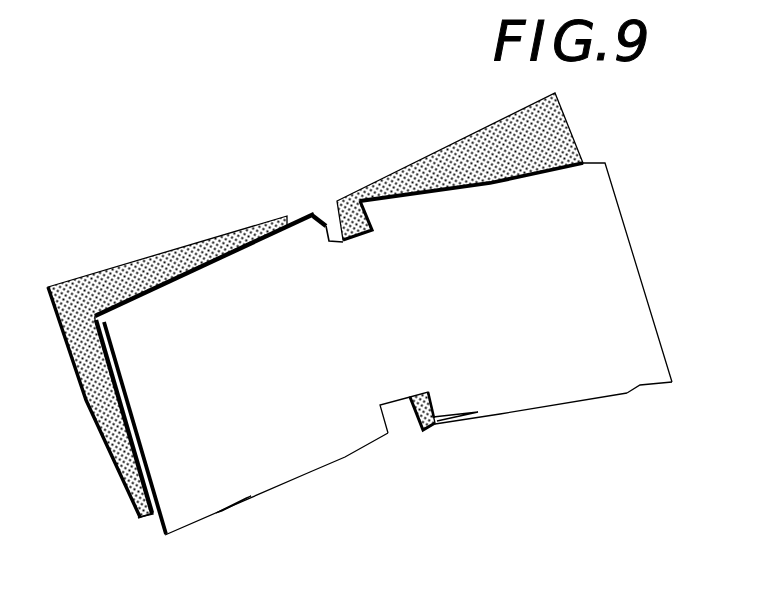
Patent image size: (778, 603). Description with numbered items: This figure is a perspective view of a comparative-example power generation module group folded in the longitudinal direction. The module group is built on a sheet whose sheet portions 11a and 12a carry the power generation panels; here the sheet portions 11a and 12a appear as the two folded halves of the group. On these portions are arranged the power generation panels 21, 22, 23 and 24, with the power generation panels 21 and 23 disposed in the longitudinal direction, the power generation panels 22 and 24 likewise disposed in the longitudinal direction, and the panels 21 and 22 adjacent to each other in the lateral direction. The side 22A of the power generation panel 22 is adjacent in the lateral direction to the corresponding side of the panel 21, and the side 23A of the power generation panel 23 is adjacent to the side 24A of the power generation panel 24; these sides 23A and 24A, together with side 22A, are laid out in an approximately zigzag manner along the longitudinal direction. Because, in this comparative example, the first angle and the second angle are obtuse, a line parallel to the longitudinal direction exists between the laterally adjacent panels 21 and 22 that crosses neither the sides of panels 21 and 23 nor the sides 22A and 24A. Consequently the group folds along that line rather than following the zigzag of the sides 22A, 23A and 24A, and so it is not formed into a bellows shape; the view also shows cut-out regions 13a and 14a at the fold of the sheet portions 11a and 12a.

The sheet portion 11a is at (303, 482).
The sheet portion 12a is at (563, 403).
The lower notch 13a is at (400, 365).
The upper notch 14a is at (328, 230).
The power generation panel 21 is at (120, 384).
The power generation panel 22 is at (165, 260).
The side 22A is at (143, 519).
The power generation panel 23 is at (585, 160).
The side 23A is at (647, 386).
The power generation panel 24 is at (446, 155).
The side 24A is at (421, 434).